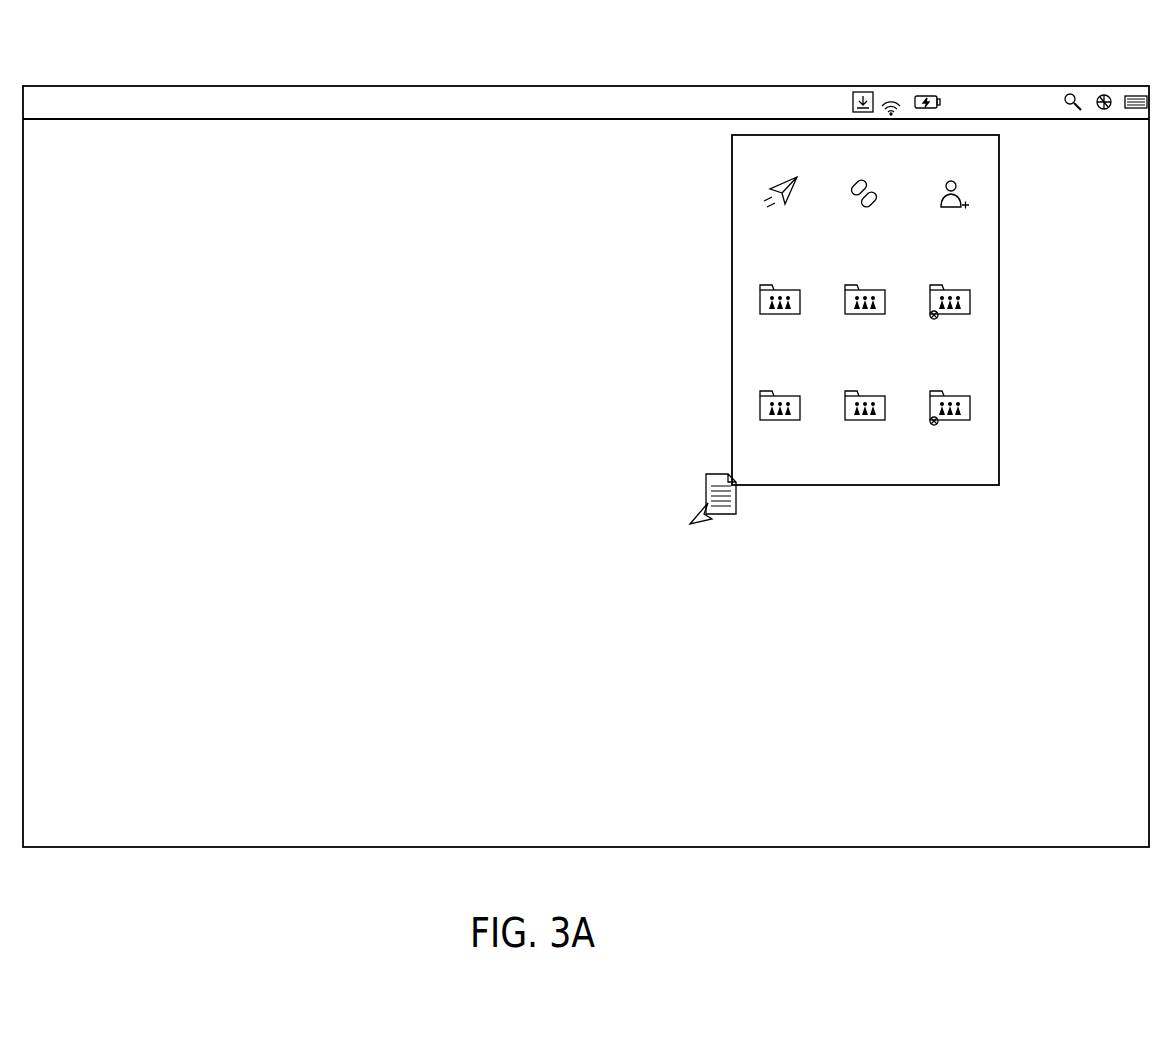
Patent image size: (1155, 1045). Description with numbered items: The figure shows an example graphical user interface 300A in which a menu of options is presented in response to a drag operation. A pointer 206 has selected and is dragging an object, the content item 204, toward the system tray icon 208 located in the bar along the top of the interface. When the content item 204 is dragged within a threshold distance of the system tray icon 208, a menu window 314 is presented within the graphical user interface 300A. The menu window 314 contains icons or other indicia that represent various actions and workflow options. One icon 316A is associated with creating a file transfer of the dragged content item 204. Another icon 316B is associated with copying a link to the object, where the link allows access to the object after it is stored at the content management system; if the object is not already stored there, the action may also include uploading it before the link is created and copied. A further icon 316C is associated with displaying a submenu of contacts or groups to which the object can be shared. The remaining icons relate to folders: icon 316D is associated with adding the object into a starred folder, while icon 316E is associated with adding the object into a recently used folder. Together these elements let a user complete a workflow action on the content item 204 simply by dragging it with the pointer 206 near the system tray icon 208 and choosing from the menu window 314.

The graphical user interface 300A is at (815, 850).
The system tray icon 208 is at (861, 91).
The menu window 314 is at (926, 487).
The icon 316A is at (768, 187).
The icon 316B is at (885, 207).
The icon 316C is at (972, 222).
The icon 316D is at (758, 301).
The icon 316E is at (758, 408).
The content item 204 is at (740, 496).
The pointer 206 is at (705, 501).